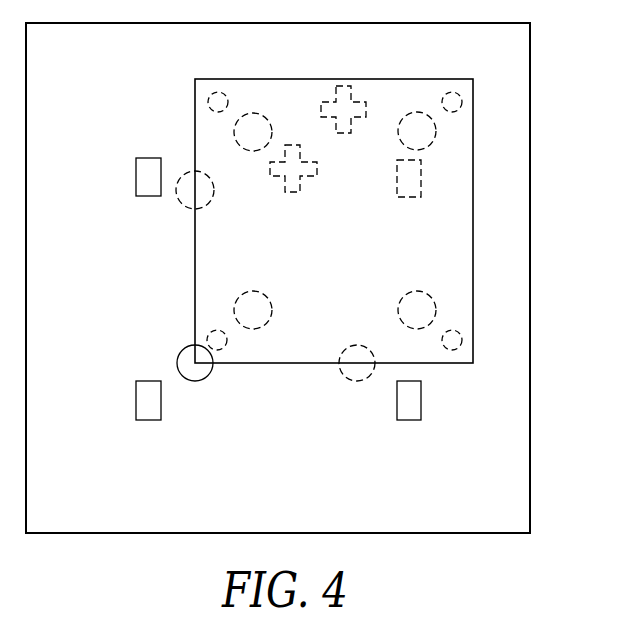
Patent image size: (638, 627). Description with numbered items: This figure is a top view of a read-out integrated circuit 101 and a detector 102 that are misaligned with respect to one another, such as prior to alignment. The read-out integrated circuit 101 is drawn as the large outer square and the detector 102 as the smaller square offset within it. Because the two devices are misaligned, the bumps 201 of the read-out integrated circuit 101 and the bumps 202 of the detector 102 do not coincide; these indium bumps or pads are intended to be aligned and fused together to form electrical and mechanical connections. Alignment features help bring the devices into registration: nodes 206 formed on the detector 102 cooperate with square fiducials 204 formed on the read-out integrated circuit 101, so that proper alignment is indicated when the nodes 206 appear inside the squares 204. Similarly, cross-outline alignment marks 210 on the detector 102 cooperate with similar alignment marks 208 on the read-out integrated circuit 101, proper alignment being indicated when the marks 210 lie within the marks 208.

The read-out integrated circuit 101 is at (530, 447).
The detector 102 is at (278, 363).
The bumps of the read-out integrated circuit 201 is at (191, 208).
The bumps of the detector 202 is at (256, 113).
The square fiducials 204 is at (136, 184).
The nodes 206 is at (208, 102).
The alignment marks of the read-out integrated circuit 208 is at (293, 193).
The alignment marks of the detector 210 is at (343, 86).